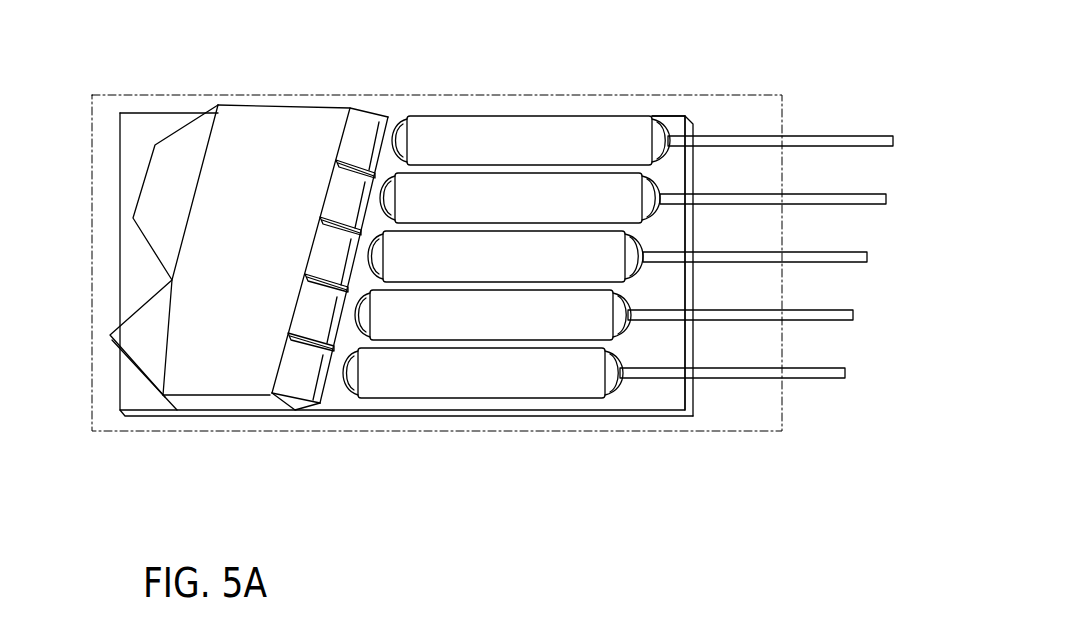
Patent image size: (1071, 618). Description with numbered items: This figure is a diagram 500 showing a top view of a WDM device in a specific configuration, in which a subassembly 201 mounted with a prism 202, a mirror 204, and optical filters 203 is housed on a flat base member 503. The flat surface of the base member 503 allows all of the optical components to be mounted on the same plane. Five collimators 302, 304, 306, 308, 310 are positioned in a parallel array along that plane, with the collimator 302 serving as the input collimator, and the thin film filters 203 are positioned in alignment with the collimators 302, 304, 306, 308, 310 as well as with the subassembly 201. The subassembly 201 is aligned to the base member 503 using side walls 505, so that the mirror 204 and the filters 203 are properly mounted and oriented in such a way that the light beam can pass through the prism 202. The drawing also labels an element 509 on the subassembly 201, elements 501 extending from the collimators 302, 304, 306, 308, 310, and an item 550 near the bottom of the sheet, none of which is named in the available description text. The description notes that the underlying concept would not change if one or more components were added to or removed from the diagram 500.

The diagram 500 is at (117, 37).
The prism 202 is at (122, 368).
The base member 503 is at (677, 123).
The mirror 204 is at (180, 122).
The ridge 509 is at (218, 105).
The subassembly 201 is at (280, 108).
The optical filters 203 is at (387, 115).
The side walls 505 is at (270, 412).
The collimator 310 is at (490, 151).
The collimator 308 is at (490, 208).
The collimator 306 is at (490, 266).
The collimator 304 is at (490, 325).
The input collimator 302 is at (490, 383).
The rod 501 is at (742, 133).
The direction indicator 550 is at (610, 617).